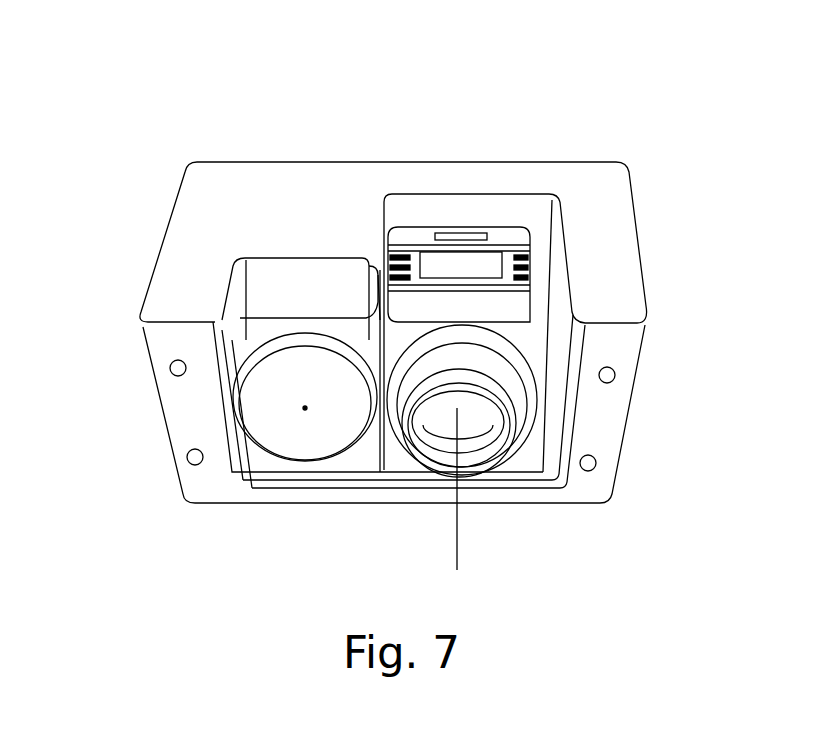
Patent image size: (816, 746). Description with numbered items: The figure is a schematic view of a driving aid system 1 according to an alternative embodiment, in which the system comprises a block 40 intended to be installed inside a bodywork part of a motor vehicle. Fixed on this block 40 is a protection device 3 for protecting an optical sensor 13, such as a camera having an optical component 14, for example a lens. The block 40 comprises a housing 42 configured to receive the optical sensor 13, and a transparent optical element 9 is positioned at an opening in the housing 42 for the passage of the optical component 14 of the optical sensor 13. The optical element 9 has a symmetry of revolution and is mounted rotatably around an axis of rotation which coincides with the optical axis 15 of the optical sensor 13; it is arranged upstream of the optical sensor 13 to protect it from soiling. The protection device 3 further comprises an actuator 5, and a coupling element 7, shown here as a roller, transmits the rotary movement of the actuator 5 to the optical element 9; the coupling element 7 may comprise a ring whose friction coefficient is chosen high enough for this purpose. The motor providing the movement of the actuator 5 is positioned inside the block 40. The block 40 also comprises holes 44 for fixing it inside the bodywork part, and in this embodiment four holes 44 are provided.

The driving aid system 1 is at (498, 78).
The protection device 3 is at (378, 305).
The actuator 5 is at (288, 427).
The coupling element 7 is at (247, 353).
The optical element 9 is at (523, 398).
The optical sensor 13 is at (493, 258).
The optical component 14 is at (443, 428).
The optical axis 15 is at (457, 542).
The block 40 is at (322, 187).
The housing 42 is at (557, 290).
The holes 44 is at (195, 457).